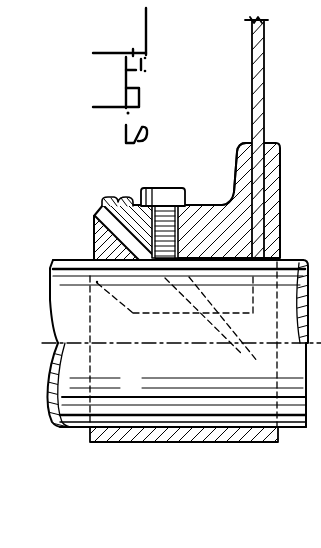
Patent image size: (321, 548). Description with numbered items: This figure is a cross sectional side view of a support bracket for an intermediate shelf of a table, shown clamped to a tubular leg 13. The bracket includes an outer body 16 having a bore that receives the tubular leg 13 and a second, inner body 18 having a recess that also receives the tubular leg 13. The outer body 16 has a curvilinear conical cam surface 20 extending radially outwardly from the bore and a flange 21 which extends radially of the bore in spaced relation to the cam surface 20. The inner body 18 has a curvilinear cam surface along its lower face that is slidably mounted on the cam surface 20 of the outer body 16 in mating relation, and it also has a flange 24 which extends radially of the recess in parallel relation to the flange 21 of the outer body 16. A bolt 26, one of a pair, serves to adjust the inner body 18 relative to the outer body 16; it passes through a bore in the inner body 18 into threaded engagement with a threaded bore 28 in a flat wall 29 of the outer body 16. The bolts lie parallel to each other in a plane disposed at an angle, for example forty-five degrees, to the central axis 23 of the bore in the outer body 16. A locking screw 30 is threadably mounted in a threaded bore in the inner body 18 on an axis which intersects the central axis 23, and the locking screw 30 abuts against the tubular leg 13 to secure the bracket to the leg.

The tubular leg 13 is at (293, 423).
The outer body 16 is at (188, 442).
The inner body 18 is at (225, 205).
The curvilinear conical cam surface 20 is at (98, 207).
The flange 21 is at (272, 192).
The central axis 23 is at (118, 345).
The flange 24 is at (240, 158).
The bolt 26 is at (117, 193).
The threaded bore 28 is at (241, 353).
The flat wall 29 is at (149, 313).
The locking screw 30 is at (163, 192).